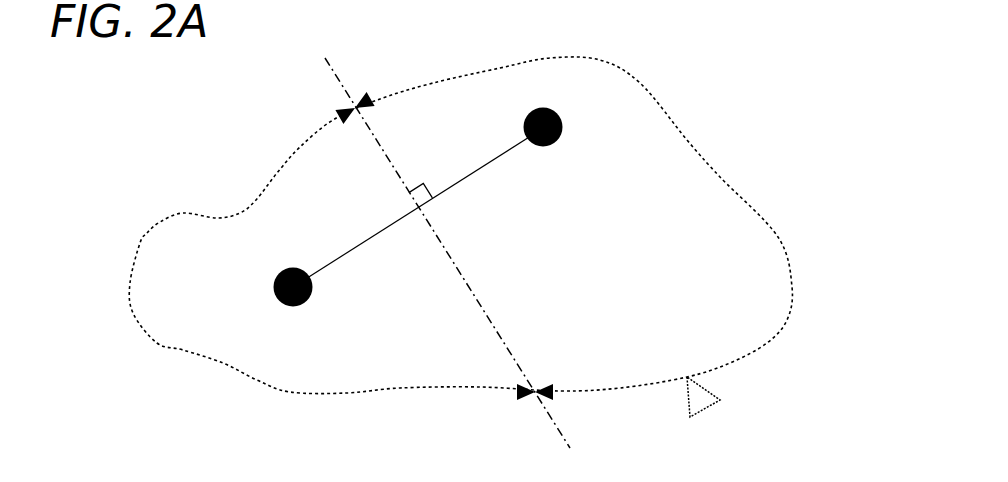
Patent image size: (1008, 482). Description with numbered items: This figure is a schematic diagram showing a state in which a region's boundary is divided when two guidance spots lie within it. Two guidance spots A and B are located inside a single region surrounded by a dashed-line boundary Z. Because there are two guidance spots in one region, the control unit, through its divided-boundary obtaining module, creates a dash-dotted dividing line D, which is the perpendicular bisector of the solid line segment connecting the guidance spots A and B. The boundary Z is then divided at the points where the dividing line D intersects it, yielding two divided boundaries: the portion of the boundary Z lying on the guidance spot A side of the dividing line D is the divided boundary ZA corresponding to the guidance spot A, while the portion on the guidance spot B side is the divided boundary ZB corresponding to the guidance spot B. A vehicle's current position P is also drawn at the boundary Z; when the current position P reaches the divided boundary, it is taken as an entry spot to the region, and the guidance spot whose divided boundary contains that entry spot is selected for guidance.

The guidance spot A is at (293, 302).
The guidance spot B is at (543, 110).
The dividing line D is at (473, 286).
The boundary Z is at (797, 283).
The divided boundary ZA is at (173, 347).
The divided boundary ZB is at (693, 143).
The current position P is at (720, 400).